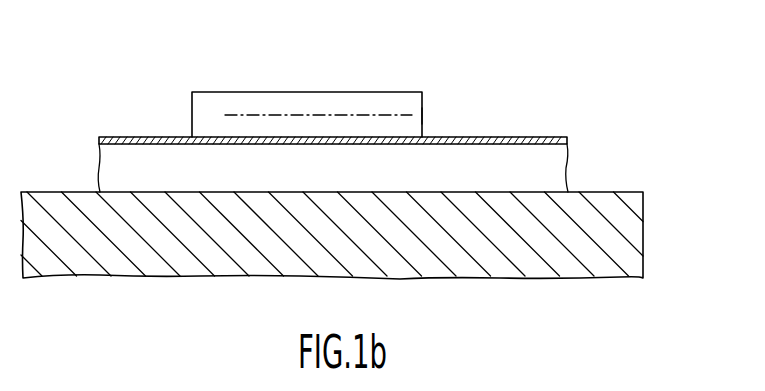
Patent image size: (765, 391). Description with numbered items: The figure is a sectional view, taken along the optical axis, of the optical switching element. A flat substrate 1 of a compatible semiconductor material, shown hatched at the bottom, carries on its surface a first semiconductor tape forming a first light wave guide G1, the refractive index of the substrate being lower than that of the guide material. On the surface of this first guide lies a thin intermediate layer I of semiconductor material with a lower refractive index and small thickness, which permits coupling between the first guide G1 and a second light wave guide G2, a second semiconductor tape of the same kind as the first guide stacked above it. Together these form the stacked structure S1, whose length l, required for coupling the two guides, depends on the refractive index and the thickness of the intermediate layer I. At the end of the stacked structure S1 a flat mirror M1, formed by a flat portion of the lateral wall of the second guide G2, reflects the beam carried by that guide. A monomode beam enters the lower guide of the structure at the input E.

The flat substrate 1 is at (610, 244).
The first light wave guide G1 is at (552, 168).
The intermediate layer I is at (567, 142).
The second light wave guide G2 is at (333, 103).
The stacked structure S1 is at (407, 84).
The flat mirror M1 is at (424, 116).
The length of the stacked structure l is at (425, 22).
The input E is at (87, 161).